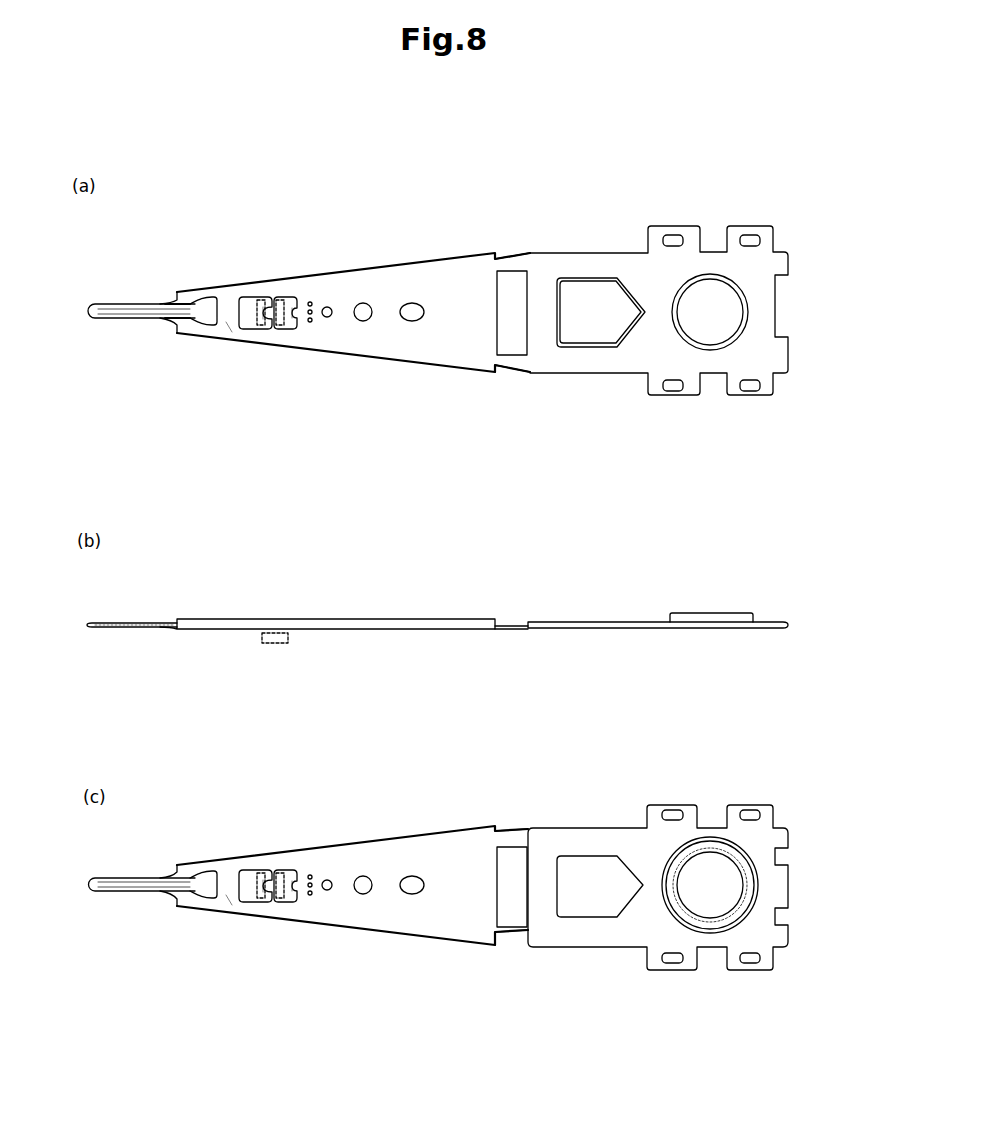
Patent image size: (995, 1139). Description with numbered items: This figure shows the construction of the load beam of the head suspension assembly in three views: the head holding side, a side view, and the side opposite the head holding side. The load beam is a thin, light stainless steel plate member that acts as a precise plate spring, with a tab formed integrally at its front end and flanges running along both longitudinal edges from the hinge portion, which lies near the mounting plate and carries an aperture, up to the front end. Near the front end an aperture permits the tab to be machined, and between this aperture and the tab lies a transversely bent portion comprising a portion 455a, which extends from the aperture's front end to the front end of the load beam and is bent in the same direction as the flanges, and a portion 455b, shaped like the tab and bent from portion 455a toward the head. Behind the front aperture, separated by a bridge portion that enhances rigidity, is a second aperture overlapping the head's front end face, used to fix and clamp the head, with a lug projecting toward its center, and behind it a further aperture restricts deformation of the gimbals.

The portion 455a is at (178, 301).
The portion 455b is at (171, 320).